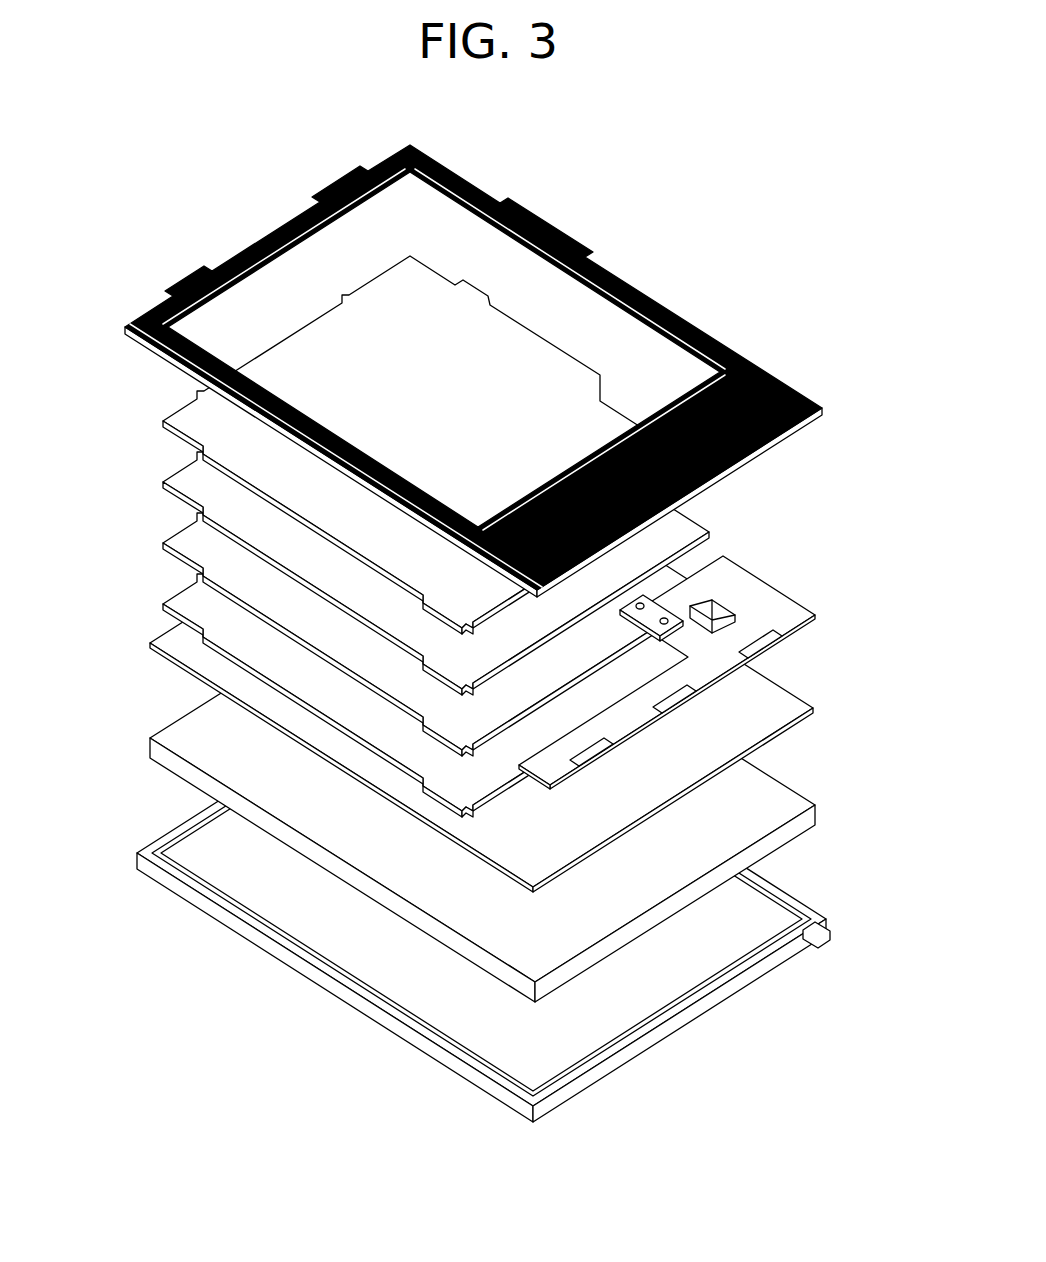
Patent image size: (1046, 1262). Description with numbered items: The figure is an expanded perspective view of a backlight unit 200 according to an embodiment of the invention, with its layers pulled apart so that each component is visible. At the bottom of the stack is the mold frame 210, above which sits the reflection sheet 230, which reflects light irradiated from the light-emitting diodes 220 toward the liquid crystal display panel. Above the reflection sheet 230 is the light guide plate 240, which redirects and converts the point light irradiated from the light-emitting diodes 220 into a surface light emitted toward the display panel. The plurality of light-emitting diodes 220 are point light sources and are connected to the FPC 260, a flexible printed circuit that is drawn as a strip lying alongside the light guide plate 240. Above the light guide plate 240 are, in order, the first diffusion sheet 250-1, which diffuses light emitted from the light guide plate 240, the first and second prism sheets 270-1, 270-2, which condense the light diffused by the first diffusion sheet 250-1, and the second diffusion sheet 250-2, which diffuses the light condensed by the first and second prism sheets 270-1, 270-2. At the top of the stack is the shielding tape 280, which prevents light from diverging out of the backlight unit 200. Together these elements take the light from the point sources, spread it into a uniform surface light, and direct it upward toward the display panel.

The backlight unit 200 is at (190, 177).
The mold frame 210 is at (830, 931).
The light-emitting diodes 220 is at (614, 744).
The reflection sheet 230 is at (817, 805).
The light guide plate 240 is at (817, 707).
The first diffusion sheet 250-1 is at (212, 618).
The second diffusion sheet 250-2 is at (212, 435).
The FPC (Flexible Printed Circuit) 260 is at (790, 592).
The first prism sheet 270-1 is at (212, 557).
The second prism sheet 270-2 is at (212, 496).
The shielding tape 280 is at (172, 362).